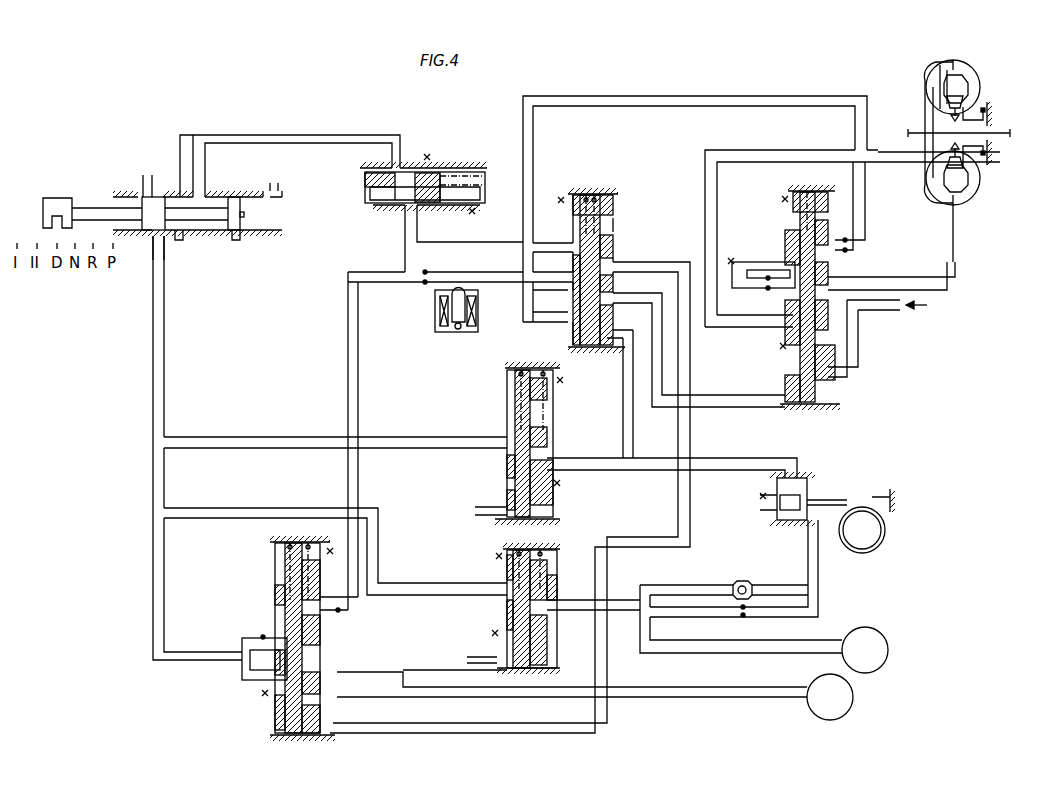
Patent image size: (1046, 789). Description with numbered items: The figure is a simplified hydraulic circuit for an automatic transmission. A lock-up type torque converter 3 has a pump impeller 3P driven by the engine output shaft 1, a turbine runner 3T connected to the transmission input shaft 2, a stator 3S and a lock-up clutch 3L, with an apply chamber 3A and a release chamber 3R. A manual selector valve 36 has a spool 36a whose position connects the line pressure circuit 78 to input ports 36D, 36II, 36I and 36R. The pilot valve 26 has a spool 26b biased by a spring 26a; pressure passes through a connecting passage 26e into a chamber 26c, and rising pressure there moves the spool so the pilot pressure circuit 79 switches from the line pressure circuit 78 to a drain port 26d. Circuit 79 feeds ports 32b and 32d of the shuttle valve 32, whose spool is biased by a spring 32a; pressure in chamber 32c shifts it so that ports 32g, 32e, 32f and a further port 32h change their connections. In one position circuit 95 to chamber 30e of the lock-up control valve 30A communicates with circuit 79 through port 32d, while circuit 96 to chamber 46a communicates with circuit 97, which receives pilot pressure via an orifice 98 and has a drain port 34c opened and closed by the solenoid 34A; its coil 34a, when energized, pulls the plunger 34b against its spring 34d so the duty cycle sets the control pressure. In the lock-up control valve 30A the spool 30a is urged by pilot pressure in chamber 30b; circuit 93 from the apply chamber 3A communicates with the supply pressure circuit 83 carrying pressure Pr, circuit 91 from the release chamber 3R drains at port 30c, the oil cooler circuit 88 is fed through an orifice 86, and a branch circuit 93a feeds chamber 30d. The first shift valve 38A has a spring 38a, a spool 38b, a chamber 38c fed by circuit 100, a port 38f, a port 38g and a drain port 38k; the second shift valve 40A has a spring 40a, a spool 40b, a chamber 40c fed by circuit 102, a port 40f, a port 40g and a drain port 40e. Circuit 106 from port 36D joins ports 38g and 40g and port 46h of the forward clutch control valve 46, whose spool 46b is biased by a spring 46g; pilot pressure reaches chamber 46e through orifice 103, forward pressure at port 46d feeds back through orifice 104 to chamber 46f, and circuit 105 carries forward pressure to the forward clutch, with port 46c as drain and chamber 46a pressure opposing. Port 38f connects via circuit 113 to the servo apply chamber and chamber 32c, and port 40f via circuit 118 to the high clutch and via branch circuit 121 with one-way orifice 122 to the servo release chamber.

The manual selector valve 36 is at (103, 192).
The input port II 36II is at (140, 192).
The input port R 36R is at (282, 188).
The input port I 36I is at (142, 238).
The input port D 36D is at (178, 238).
The spool 36a is at (238, 238).
The line pressure circuit 78 is at (300, 134).
The pilot valve 26 is at (415, 177).
The spring 26a is at (473, 172).
The spool 26b is at (440, 203).
The chamber 26c is at (368, 200).
The drain port 26d is at (426, 156).
The connecting passage 26e is at (365, 188).
The pilot pressure circuit 79 is at (758, 96).
The orifice 98 is at (400, 272).
The circuit 97 is at (513, 260).
The solenoid 34A is at (452, 307).
The coil 34a is at (478, 312).
The plunger 34b is at (438, 303).
The drain port 34c is at (460, 290).
The spring 34d is at (455, 330).
The shuttle valve 32 is at (597, 264).
The spring 32a is at (578, 196).
The spool 32b is at (616, 228).
The chamber 32c is at (590, 350).
The port 32d is at (568, 317).
The port 32e is at (616, 264).
The port 32f is at (568, 280).
The port 32g is at (616, 297).
The port 32h is at (568, 246).
The circuit 96 is at (690, 433).
The circuit 95 is at (712, 395).
The circuit 113 is at (623, 412).
The circuit 91 is at (705, 186).
The lock-up control valve 30A is at (800, 190).
The spool 30a is at (795, 210).
The chamber 30b is at (850, 244).
The drain port 30c is at (783, 346).
The chamber 30d is at (786, 372).
The chamber 30e is at (808, 408).
The oil cooler circuit 88 is at (755, 262).
The orifice 86 is at (766, 282).
The circuit 93 is at (958, 278).
The torque converter supply pressure circuit 83 is at (886, 311).
The torque converter supply pressure Pr is at (928, 306).
The branch circuit 93a is at (858, 364).
The torque converter 3 is at (972, 60).
The turbine runner 3T is at (941, 62).
The pump impeller 3P is at (972, 82).
The stator 3S is at (968, 110).
The torque converter apply chamber 3A is at (975, 188).
The lock-up clutch 3L is at (926, 118).
The torque converter release chamber 3R is at (926, 160).
The engine output shaft 1 is at (915, 130).
The transmission input shaft 2 is at (1000, 152).
The circuit 106 is at (277, 437).
The first shift valve 38A is at (502, 397).
The spring 38a is at (512, 402).
The spool 38b is at (517, 424).
The chamber 38c is at (508, 508).
The port 38f is at (553, 460).
The port 38g is at (500, 450).
The drain port 38k is at (550, 488).
The circuit 100 is at (497, 515).
The second shift valve 40A is at (563, 550).
The spring 40a is at (505, 563).
The spool 40b is at (547, 635).
The chamber 40c is at (547, 665).
The drain port 40e is at (497, 635).
The port 40f is at (547, 605).
The port 40g is at (503, 590).
The circuit 102 is at (490, 663).
The circuit 105 is at (430, 655).
The circuit 118 is at (620, 605).
The one-way orifice 122 is at (730, 583).
The branch circuit 121 is at (818, 575).
The forward clutch control valve 46 is at (267, 563).
The chamber 46a is at (280, 730).
The spool 46b is at (280, 618).
The drain port 46c is at (268, 694).
The port 46d is at (330, 685).
The chamber 46e is at (277, 593).
The chamber 46f is at (333, 643).
The spring 46g is at (280, 547).
The port 46h is at (277, 657).
The orifice 104 is at (262, 637).
The orifice 103 is at (342, 608).